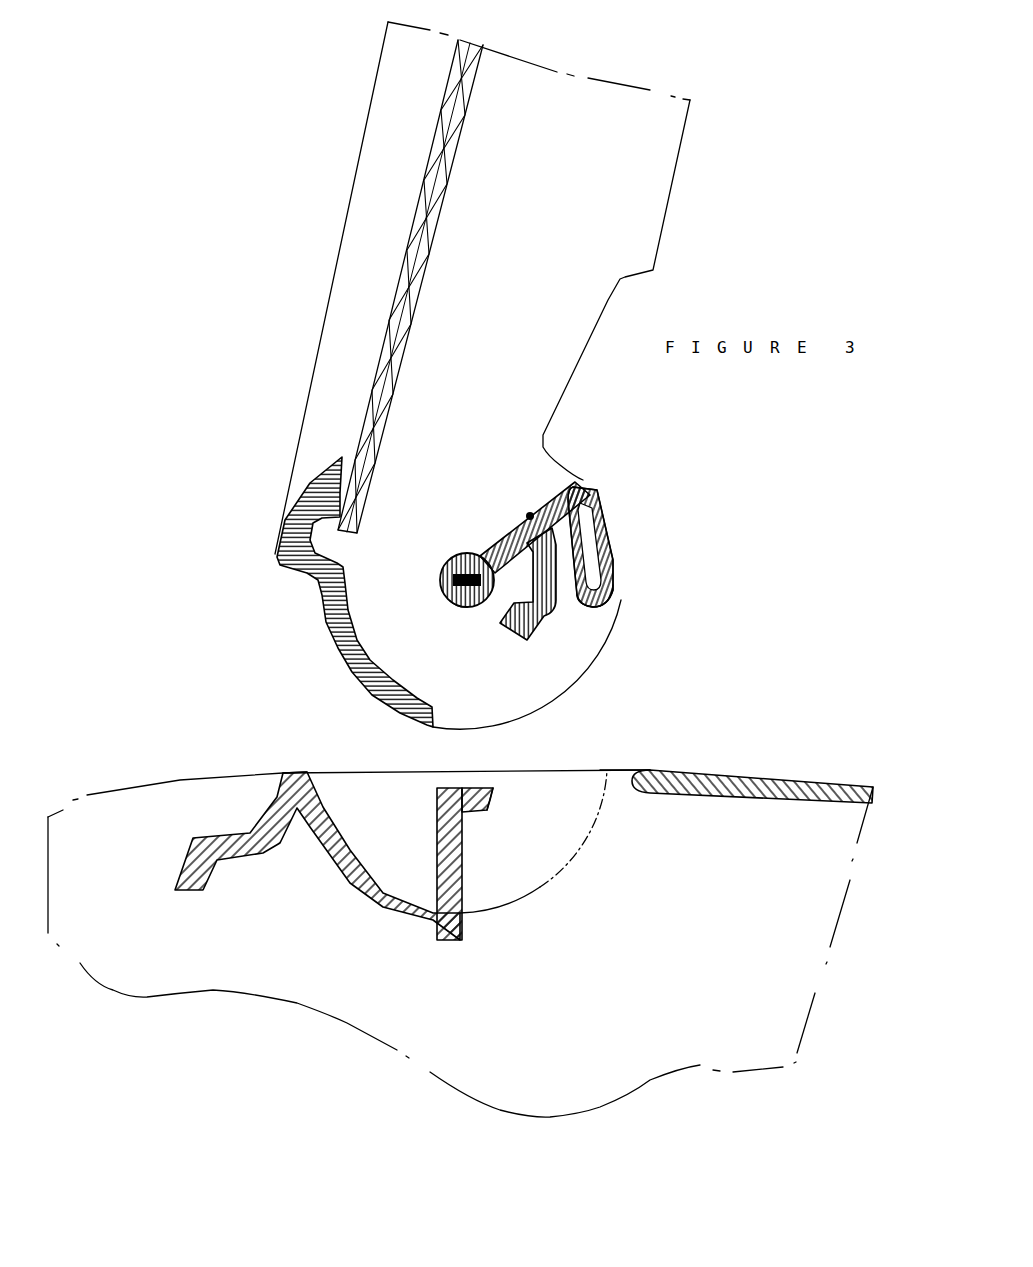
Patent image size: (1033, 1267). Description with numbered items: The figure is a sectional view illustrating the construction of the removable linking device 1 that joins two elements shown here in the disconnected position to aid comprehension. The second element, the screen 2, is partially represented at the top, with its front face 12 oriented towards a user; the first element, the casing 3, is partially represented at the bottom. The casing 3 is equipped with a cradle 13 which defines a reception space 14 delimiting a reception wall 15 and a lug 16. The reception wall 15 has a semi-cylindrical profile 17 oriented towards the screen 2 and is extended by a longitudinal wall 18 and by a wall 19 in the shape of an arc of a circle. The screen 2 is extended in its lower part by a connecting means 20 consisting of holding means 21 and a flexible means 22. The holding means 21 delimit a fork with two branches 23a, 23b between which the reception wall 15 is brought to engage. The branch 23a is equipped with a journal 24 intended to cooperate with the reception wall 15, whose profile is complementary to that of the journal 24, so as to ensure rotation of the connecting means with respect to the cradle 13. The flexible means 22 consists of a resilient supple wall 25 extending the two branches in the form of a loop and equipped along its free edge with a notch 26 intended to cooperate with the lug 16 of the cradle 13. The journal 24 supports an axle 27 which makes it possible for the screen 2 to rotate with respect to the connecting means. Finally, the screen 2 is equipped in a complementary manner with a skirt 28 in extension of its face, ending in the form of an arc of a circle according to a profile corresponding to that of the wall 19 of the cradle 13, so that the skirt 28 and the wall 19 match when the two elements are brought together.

The removable linking device 1 is at (132, 626).
The screen 2 is at (592, 107).
The casing 3 is at (534, 1073).
The front face 12 is at (358, 238).
The cradle 13 is at (262, 786).
The reception space 14 is at (559, 824).
The reception wall 15 is at (483, 797).
The lug 16 is at (640, 797).
The semi-cylindrical profile 17 is at (465, 788).
The longitudinal wall 18 is at (457, 883).
The arc-of-a-circle wall 19 is at (347, 867).
The connecting means 20 is at (530, 514).
The holding means 21 is at (478, 625).
The flexible means 22 is at (618, 529).
The branch 23a is at (507, 543).
The branch 23b is at (540, 618).
The journal 24 is at (436, 583).
The resilient supple wall 25 is at (620, 575).
The notch 26 is at (588, 485).
The axle 27 is at (460, 607).
The skirt 28 is at (330, 640).